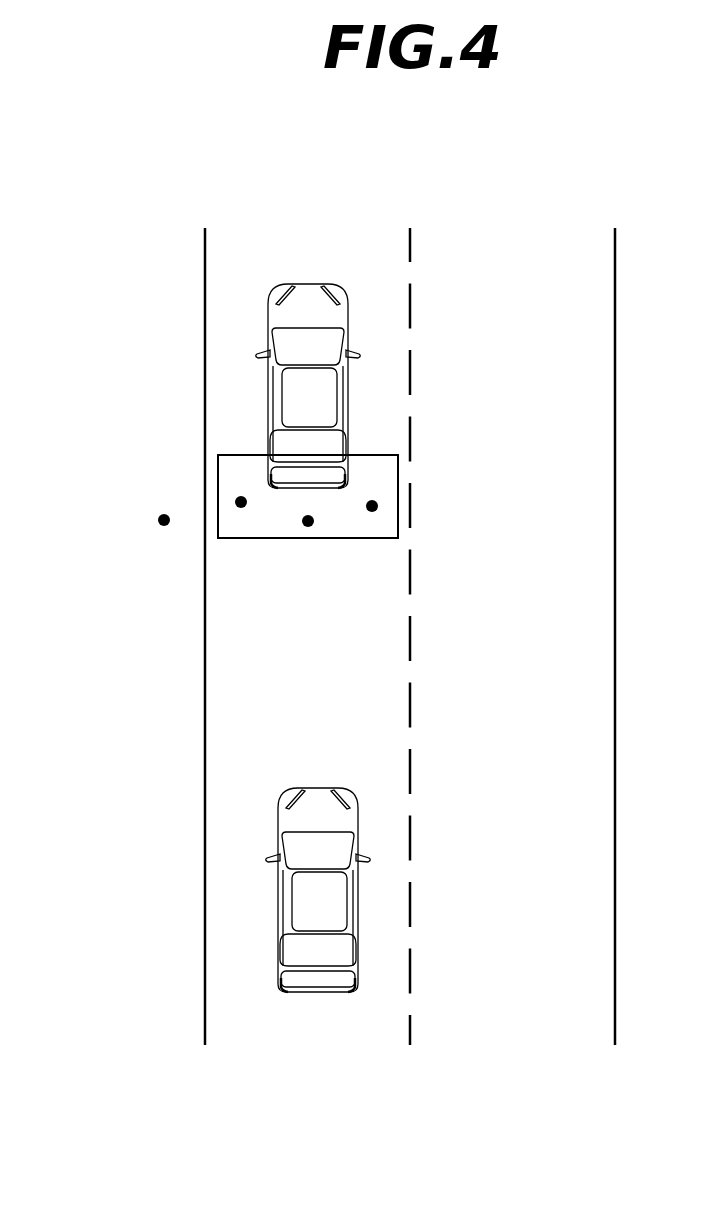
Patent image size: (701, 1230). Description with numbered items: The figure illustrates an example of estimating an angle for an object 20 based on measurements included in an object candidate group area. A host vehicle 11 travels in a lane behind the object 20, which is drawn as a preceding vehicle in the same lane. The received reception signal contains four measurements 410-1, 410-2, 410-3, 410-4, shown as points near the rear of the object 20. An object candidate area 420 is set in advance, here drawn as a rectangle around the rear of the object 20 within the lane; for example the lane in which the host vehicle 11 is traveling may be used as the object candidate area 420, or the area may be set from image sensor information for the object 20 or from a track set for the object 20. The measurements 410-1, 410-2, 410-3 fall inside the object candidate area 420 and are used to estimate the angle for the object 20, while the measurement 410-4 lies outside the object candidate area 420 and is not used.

The object 20 is at (308, 284).
The host vehicle 11 is at (328, 993).
The object candidate area 420 is at (399, 483).
The measurement 410-1 is at (372, 512).
The measurement 410-2 is at (309, 527).
The measurement 410-3 is at (243, 508).
The measurement 410-4 is at (158, 520).